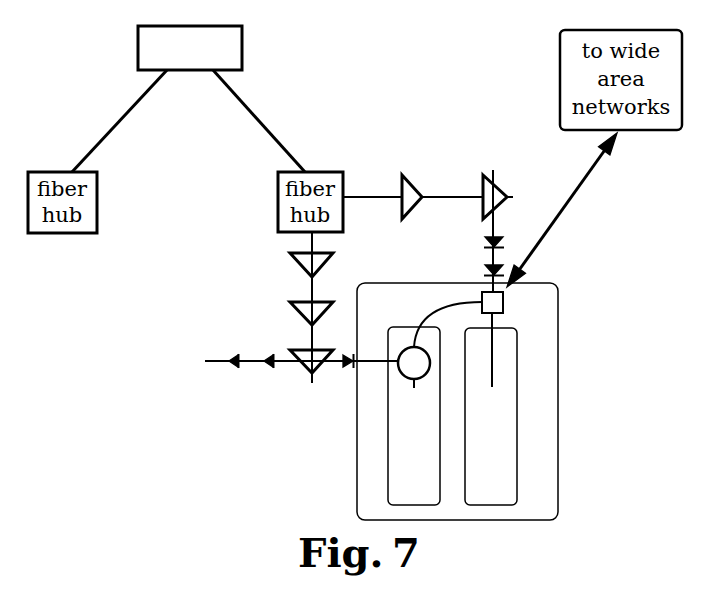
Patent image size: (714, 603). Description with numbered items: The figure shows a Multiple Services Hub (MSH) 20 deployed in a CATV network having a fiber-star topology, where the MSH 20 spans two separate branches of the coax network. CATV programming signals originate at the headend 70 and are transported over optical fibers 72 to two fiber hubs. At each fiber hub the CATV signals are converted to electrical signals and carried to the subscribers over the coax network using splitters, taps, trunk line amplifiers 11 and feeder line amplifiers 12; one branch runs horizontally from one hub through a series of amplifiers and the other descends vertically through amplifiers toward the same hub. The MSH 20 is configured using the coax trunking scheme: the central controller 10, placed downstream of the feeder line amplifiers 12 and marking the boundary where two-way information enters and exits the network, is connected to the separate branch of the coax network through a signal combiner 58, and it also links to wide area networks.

The headend 70 is at (243, 42).
The optical fibers 72 is at (125, 122).
The trunk line amplifiers 11 is at (408, 175).
The feeder line amplifiers 12 is at (235, 368).
The central controller 10 is at (504, 310).
The signal combiner 58 is at (399, 371).
The Multiple Services Hub (MSH) 20 is at (558, 398).